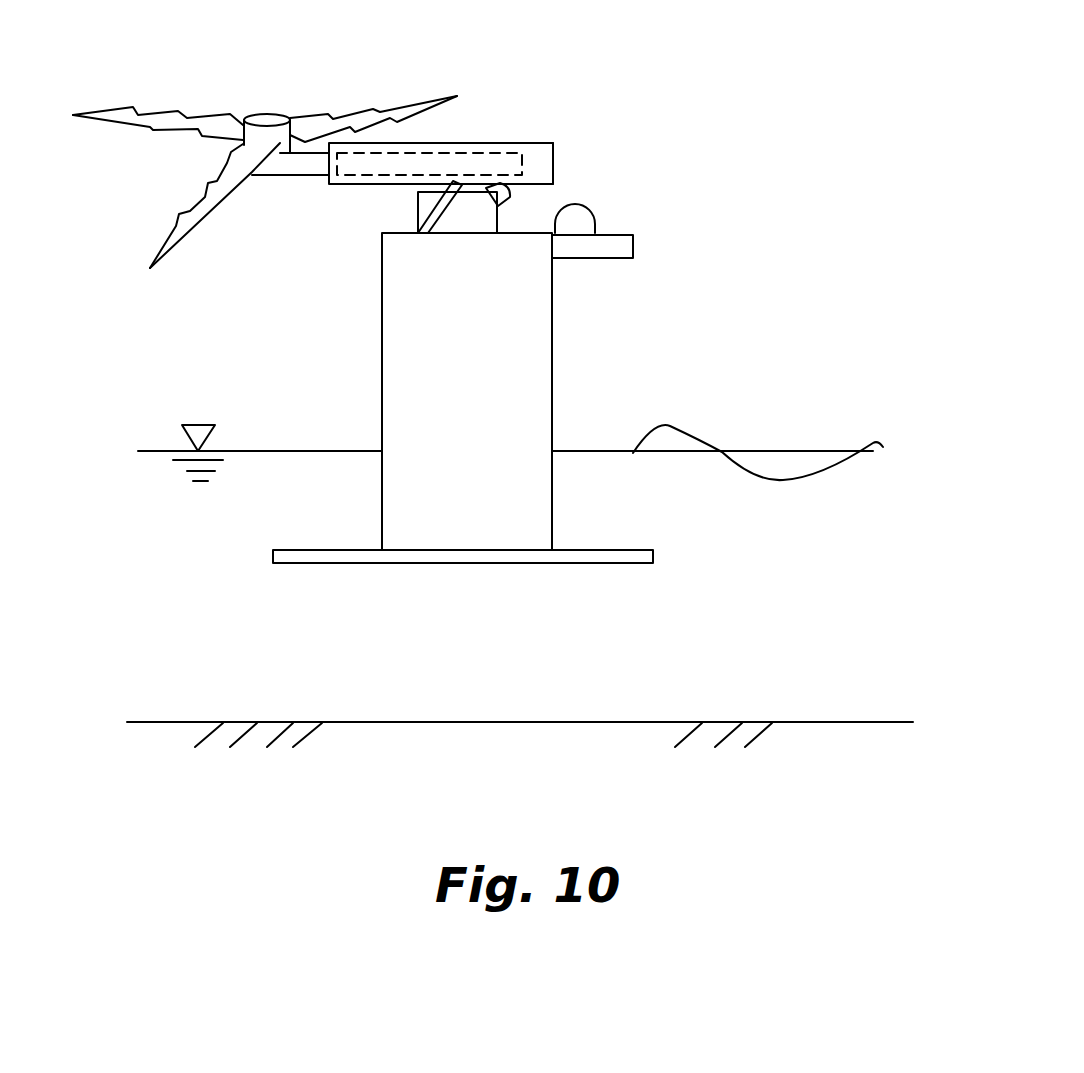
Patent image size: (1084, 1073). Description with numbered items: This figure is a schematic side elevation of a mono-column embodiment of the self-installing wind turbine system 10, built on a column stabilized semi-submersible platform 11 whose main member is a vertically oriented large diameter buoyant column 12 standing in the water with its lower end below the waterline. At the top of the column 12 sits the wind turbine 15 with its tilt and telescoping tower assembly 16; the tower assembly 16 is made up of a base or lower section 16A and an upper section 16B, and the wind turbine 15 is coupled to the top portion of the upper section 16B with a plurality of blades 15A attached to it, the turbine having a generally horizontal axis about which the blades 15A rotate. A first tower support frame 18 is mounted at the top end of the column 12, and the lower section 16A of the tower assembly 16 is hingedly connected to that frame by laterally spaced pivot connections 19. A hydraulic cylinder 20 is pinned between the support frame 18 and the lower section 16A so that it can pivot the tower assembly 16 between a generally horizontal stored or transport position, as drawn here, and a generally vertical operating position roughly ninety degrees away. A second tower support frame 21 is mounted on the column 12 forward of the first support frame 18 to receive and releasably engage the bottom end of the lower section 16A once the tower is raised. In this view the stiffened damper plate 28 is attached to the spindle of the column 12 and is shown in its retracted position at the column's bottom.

The self-installing wind turbine system 10 is at (686, 58).
The column stabilized semi-submersible platform 11 is at (658, 307).
The large diameter buoyant column 12 is at (487, 391).
The wind turbine 15 is at (268, 118).
The blades 15A is at (360, 110).
The tilt and telescoping tower assembly 16 is at (506, 133).
The base or lower section 16A is at (553, 165).
The upper section 16B is at (277, 177).
The first tower support frame 18 is at (418, 208).
The pivot connections 19 is at (510, 200).
The hydraulic cylinder 20 is at (441, 220).
The second tower support frame 21 is at (623, 234).
The stiffened damper plate 28 is at (637, 550).